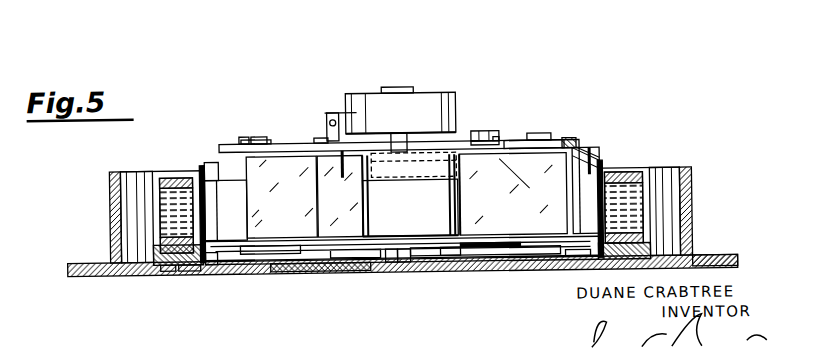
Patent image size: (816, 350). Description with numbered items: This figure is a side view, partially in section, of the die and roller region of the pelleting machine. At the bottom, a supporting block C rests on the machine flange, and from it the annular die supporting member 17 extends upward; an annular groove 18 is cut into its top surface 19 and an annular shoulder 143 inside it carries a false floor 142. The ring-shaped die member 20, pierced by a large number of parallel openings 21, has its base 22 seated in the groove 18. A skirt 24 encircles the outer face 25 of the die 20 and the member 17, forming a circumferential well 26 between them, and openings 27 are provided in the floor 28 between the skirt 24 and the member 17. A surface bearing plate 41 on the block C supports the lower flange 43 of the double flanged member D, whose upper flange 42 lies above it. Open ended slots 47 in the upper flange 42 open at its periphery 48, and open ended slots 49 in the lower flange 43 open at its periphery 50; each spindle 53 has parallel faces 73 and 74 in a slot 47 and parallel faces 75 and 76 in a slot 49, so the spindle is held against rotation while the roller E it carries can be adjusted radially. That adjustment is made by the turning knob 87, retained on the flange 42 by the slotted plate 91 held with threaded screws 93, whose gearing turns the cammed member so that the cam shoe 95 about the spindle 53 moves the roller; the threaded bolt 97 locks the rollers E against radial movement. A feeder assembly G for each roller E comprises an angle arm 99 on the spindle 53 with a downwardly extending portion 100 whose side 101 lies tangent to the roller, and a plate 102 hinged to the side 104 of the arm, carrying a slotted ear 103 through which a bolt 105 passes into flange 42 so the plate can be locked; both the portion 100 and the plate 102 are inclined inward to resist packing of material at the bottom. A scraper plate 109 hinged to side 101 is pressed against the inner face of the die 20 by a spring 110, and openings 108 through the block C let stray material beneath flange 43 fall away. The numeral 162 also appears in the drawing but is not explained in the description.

The annular die supporting member 17 is at (148, 277).
The annular groove 18 is at (178, 265).
The top surface 19 is at (160, 250).
The ring-shaped die member 20 is at (165, 176).
The parallel openings 21 is at (160, 212).
The base 22 is at (170, 262).
The skirt 24 is at (692, 188).
The outer face 25 is at (645, 180).
The circumferential chamber or well 26 is at (675, 170).
The openings 27 is at (692, 259).
The floor 28 is at (660, 258).
The surface bearing plate 41 is at (352, 250).
The upper flange 42 is at (516, 143).
The lower flange 43 is at (452, 258).
The open ended slots 47 is at (412, 147).
The periphery 48 is at (579, 151).
The open ended slots 49 is at (416, 258).
The periphery 50 is at (215, 262).
The spindle 53 is at (262, 138).
The parallel face 73 is at (395, 133).
The parallel face 74 is at (408, 133).
The parallel face 75 is at (390, 262).
The parallel face 76 is at (405, 262).
The turning knob 87 is at (340, 112).
The slotted plate 91 is at (322, 140).
The threaded screws 93 is at (330, 118).
The cam shoe 95 is at (298, 258).
The threaded bolt 97 is at (497, 142).
The angle arm 99 is at (569, 140).
The downwardly extending portion 100 is at (345, 172).
The side 101 is at (363, 219).
The plate 102 is at (543, 205).
The slotted ear 103 is at (246, 138).
The side 104 is at (305, 148).
The bolt 105 is at (245, 135).
The openings 108 is at (255, 263).
The scraper plate 109 is at (203, 170).
The spring 110 is at (213, 160).
The false floor 142 is at (282, 252).
The annular shoulder 143 is at (205, 262).
The block 162 is at (281, 197).
The supporting block C is at (103, 272).
The double flanged member D is at (448, 141).
The roller E is at (207, 175).
The feeder assembly G is at (442, 195).